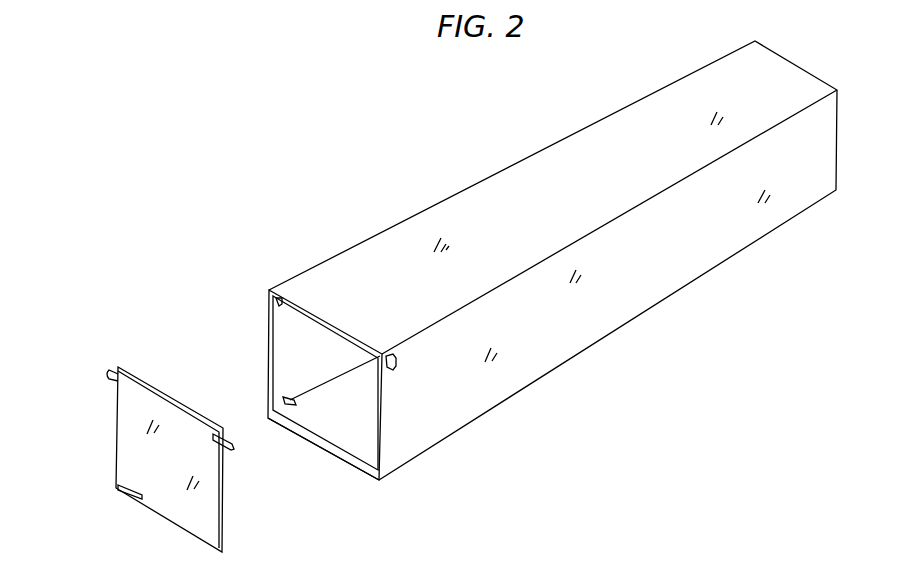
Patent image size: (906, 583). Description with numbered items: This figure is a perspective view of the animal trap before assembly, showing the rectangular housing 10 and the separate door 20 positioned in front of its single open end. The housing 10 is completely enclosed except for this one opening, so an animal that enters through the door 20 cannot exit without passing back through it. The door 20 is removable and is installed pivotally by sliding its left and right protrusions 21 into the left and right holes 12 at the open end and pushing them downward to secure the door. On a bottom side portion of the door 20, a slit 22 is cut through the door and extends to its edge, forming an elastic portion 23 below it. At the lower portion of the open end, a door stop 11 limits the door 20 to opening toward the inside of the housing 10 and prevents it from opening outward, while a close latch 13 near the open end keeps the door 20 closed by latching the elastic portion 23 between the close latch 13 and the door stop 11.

The housing 10 is at (370, 150).
The door stop 11 is at (340, 457).
The holes 12 is at (397, 362).
The close latch 13 is at (290, 398).
The door 20 is at (127, 453).
The protrusions 21 is at (234, 449).
The slit 22 is at (116, 477).
The elastic portion 23 is at (126, 497).